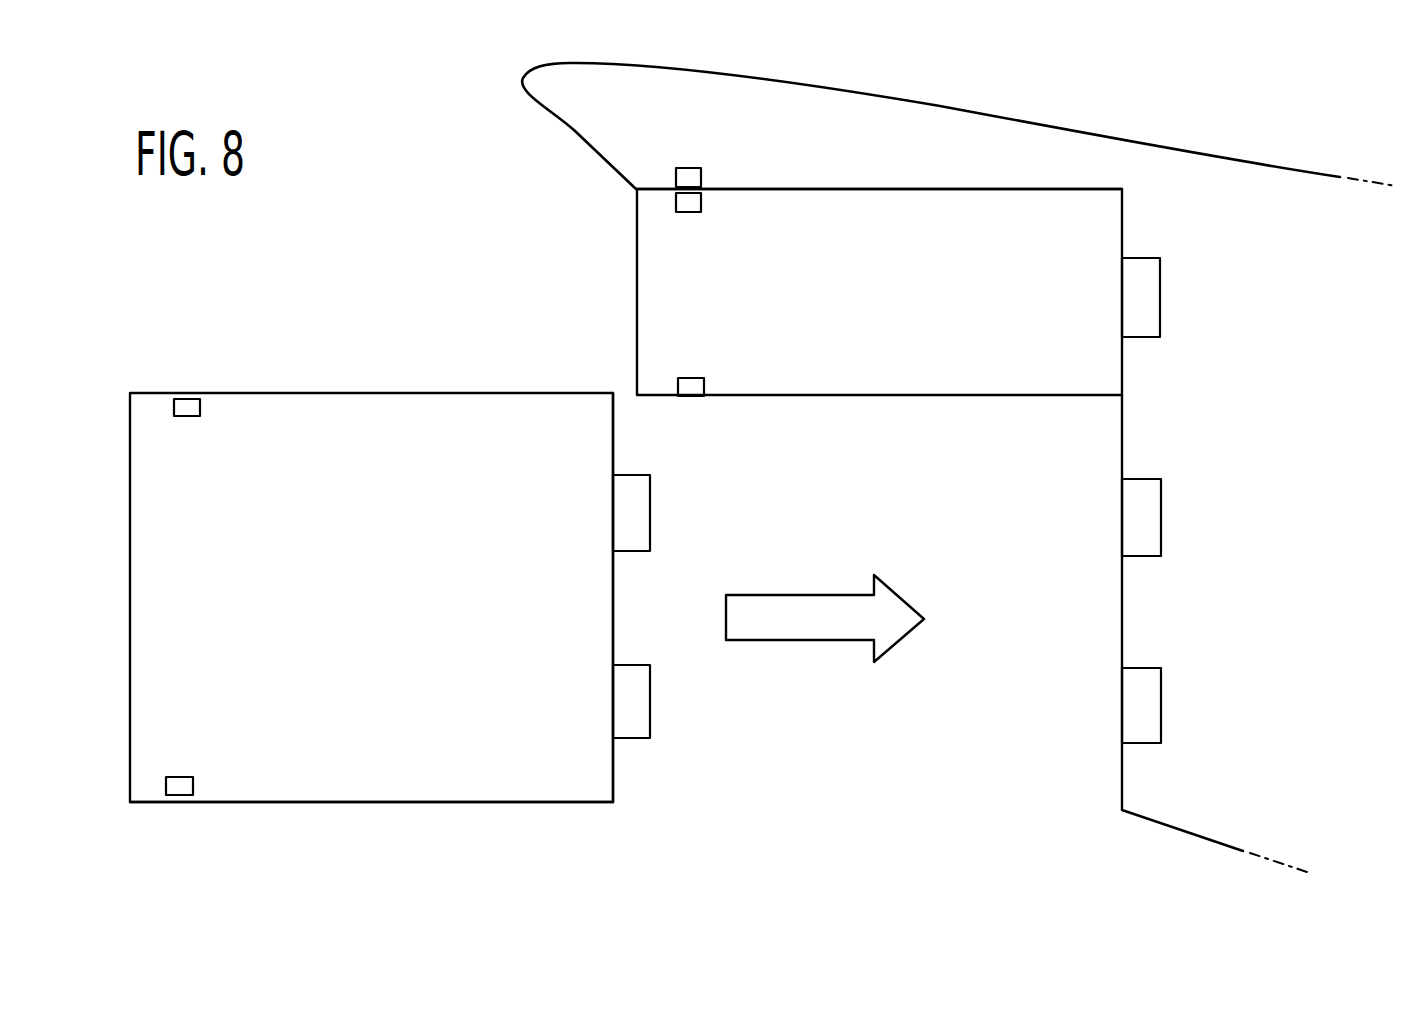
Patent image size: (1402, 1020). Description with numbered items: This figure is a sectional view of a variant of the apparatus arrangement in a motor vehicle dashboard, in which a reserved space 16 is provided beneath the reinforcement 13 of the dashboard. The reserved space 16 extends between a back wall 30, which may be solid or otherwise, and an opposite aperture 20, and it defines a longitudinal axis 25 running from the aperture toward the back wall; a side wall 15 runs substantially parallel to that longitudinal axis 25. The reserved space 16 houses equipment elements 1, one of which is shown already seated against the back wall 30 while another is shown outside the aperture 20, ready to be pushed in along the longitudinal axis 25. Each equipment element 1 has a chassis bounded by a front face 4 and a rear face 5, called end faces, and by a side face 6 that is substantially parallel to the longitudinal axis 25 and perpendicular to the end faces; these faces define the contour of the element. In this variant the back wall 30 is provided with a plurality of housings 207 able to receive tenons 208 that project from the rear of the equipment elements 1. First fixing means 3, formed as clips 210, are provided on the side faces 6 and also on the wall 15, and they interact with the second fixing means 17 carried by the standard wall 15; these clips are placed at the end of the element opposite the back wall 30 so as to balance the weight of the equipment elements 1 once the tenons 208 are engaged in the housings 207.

The equipment element 1 is at (636, 300).
The first fixing means 3 is at (709, 376).
The front face 4 is at (130, 610).
The rear face 5 is at (613, 606).
The side face 6 is at (427, 730).
The reinforcement 13 is at (657, 132).
The side wall 15 is at (795, 188).
The reserved space 16 is at (950, 746).
The second fixing means 17 is at (695, 156).
The aperture 20 is at (618, 376).
The longitudinal axis 25 is at (823, 628).
The back wall 30 is at (1122, 614).
The housing 207 is at (1160, 305).
The tenon 208 is at (650, 504).
The clip 210 is at (680, 175).